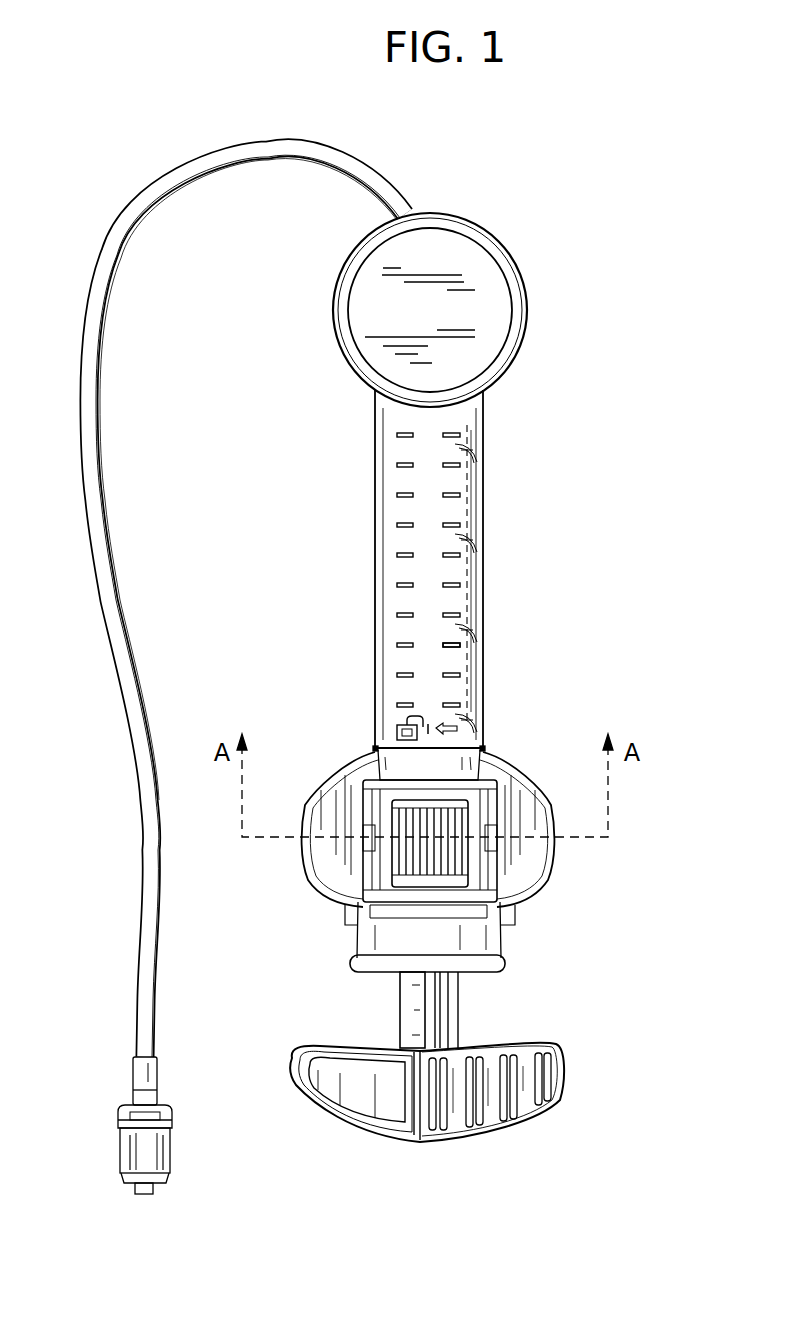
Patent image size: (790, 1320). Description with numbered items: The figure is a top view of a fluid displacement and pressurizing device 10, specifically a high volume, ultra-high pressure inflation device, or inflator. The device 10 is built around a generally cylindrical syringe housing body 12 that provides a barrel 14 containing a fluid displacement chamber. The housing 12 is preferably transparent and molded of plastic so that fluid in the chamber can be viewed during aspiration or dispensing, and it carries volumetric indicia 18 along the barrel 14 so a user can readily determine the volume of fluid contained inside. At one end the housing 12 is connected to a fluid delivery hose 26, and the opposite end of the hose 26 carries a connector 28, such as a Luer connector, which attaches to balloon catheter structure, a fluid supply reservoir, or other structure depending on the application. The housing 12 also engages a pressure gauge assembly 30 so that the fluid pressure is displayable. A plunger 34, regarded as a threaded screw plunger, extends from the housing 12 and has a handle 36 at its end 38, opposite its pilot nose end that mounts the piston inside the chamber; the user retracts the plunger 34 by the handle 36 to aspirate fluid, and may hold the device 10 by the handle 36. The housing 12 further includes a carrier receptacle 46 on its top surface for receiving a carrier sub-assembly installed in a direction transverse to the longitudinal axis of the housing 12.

The device 10 is at (580, 457).
The syringe housing body 12 is at (375, 592).
The barrel 14 is at (472, 482).
The volumetric indicia 18 is at (455, 655).
The fluid delivery hose 26 is at (266, 150).
The connector 28 is at (150, 1160).
The pressure gauge assembly 30 is at (487, 276).
The plunger 34 is at (494, 1027).
The handle 36 is at (525, 1107).
The end 38 is at (428, 1145).
The carrier receptacle 46 is at (488, 766).